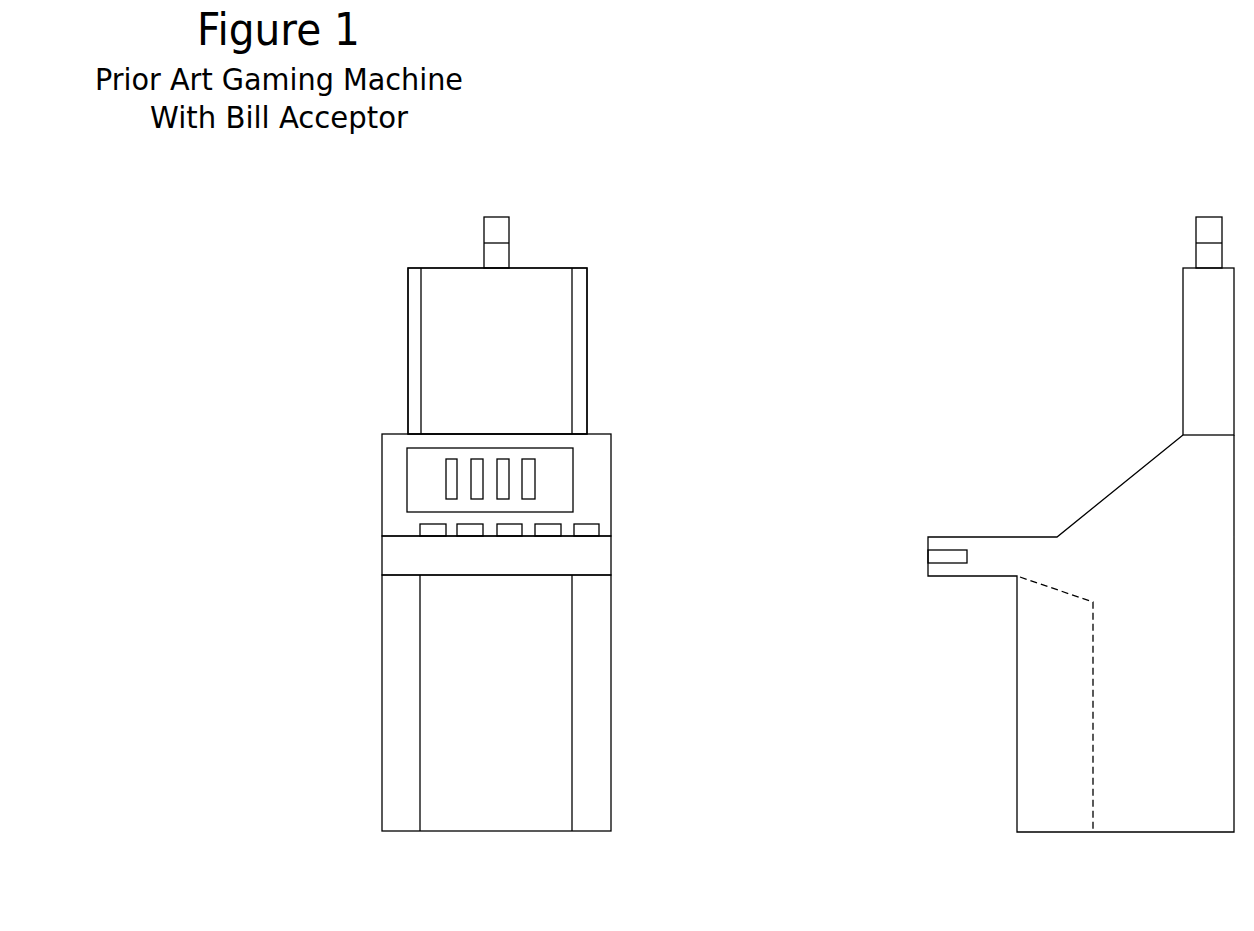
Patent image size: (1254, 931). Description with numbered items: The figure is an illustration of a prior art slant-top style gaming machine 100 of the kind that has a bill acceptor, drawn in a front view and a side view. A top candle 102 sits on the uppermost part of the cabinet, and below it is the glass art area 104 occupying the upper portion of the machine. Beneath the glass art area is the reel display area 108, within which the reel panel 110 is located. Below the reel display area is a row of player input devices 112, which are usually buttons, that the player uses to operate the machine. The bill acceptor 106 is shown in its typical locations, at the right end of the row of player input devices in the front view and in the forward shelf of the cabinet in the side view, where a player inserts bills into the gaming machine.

The gaming machine 100 is at (1105, 426).
The top candle 102 is at (510, 248).
The glass art area 104 is at (553, 330).
The bill acceptor 106 is at (927, 560).
The reel display area 108 is at (455, 460).
The reel panel 110 is at (423, 483).
The player input devices 112 is at (427, 533).